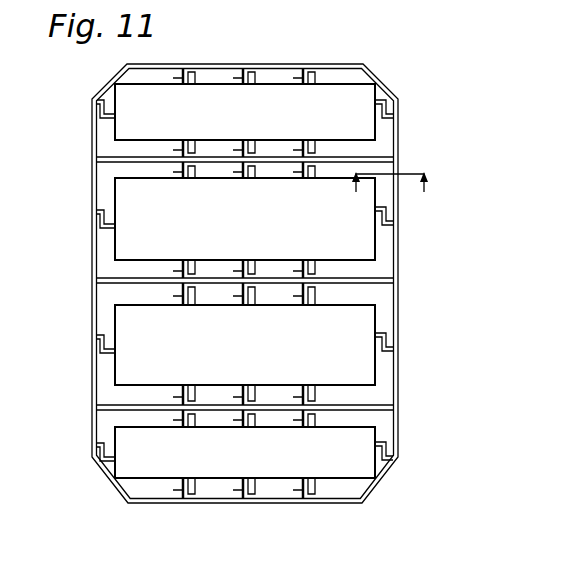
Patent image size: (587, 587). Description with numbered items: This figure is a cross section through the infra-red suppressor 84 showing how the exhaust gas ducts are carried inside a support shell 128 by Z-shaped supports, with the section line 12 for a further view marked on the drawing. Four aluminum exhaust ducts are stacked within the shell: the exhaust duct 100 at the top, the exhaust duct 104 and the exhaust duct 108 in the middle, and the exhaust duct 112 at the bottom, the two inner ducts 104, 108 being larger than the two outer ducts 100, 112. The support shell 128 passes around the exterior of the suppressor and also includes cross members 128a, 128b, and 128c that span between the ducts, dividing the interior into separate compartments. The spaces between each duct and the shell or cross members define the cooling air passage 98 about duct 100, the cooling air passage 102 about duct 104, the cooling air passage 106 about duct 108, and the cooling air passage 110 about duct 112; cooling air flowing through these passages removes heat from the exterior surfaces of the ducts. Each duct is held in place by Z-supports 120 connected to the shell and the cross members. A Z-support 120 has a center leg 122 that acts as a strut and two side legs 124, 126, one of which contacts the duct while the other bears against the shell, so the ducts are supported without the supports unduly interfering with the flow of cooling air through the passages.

The infra-red suppressor 84 is at (280, 59).
The cooling air passage 98 is at (333, 67).
The exhaust duct 100 is at (345, 106).
The cooling air passage 102 is at (368, 269).
The exhaust duct 104 is at (352, 241).
The cooling air passage 106 is at (57, 417).
The exhaust duct 108 is at (340, 357).
The cooling air passage 110 is at (327, 493).
The exhaust duct 112 is at (358, 448).
The Z-support 120 is at (322, 397).
The center leg 122 is at (182, 267).
The side leg 124 is at (187, 262).
The side leg 126 is at (157, 288).
The support shell 128 is at (404, 136).
The cross member 128a is at (108, 165).
The cross member 128b is at (370, 289).
The cross member 128c is at (132, 408).
The section line 12 is at (384, 202).